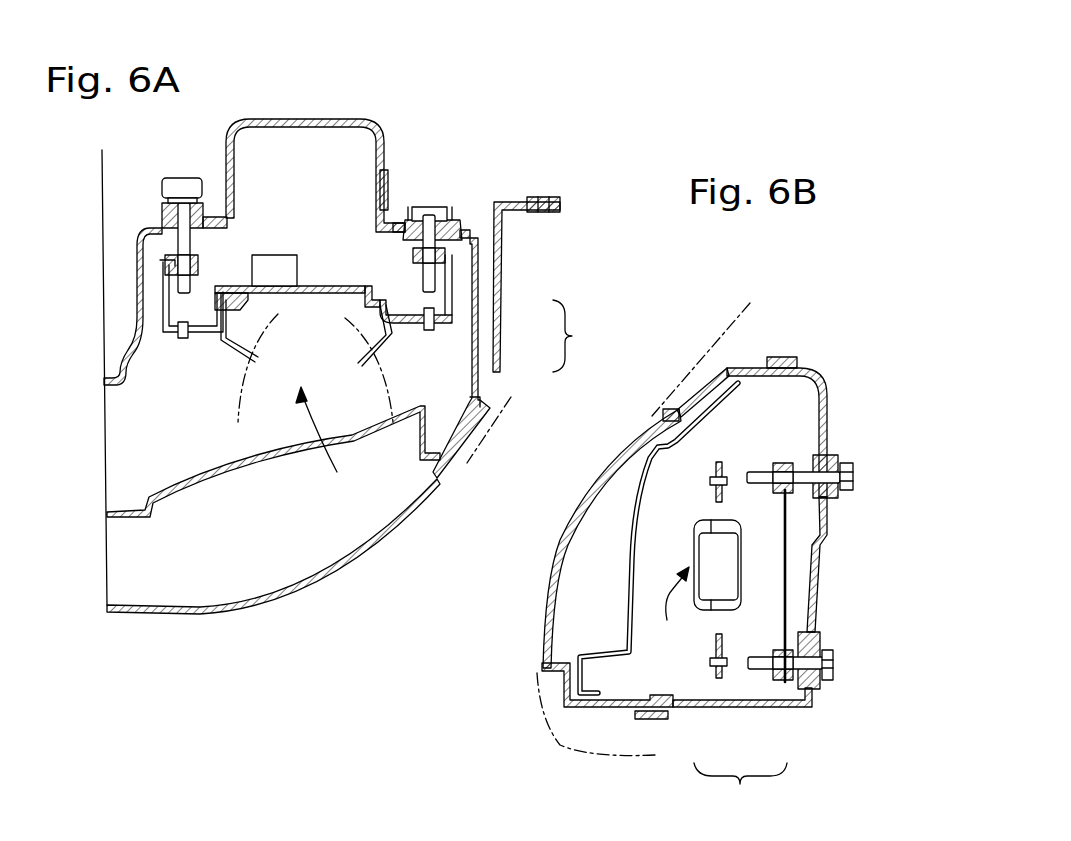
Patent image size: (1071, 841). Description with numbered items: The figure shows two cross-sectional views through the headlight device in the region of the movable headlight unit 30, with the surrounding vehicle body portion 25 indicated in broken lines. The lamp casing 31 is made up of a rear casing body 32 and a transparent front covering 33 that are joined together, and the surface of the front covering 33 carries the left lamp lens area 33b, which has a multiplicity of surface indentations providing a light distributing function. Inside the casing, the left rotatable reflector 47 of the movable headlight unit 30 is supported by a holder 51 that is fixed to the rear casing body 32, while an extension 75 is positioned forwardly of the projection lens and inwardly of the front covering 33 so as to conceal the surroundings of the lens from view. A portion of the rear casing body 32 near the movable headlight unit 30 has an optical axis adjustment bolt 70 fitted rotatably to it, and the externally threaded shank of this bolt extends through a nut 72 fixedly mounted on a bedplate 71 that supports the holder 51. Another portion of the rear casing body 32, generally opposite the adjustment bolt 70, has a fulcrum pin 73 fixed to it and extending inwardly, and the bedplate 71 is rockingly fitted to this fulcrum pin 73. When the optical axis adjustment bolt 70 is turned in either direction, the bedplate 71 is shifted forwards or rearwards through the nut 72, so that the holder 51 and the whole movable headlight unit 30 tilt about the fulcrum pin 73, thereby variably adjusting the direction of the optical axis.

In FIG. 6A, the vehicle body panel 25 is at (470, 452).
In FIG. 6B, the vehicle body panel 25 is at (722, 330).
In FIG. 6A, the movable headlight unit 30 is at (329, 445).
In FIG. 6B, the movable headlight unit 30 is at (666, 610).
In FIG. 6A, the lamp casing 31 is at (579, 336).
In FIG. 6B, the lamp casing 31 is at (740, 791).
In FIG. 6A, the rear casing body 32 is at (500, 312).
In FIG. 6B, the rear casing body 32 is at (771, 712).
In FIG. 6A, the front covering 33 is at (478, 405).
In FIG. 6B, the front covering 33 is at (612, 712).
In FIG. 6A, the left lamp lens area 33b is at (300, 582).
In FIG. 6A, the left rotatable reflector 47 is at (234, 383).
In FIG. 6A, the holder 51 is at (320, 293).
In FIG. 6B, the holder 51 is at (743, 568).
In FIG. 6A, the optical axis adjustment bolt 70 is at (182, 188).
In FIG. 6B, the optical axis adjustment bolt 70 is at (853, 477).
In FIG. 6A, the bedplate 71 is at (162, 291).
In FIG. 6B, the bedplate 71 is at (787, 604).
In FIG. 6A, the nut 72 is at (199, 262).
In FIG. 6B, the nut 72 is at (781, 462).
In FIG. 6A, the fulcrum pin 73 is at (452, 228).
In FIG. 6B, the fulcrum pin 73 is at (768, 658).
In FIG. 6A, the extension 75 is at (249, 454).
In FIG. 6B, the extension 75 is at (627, 548).